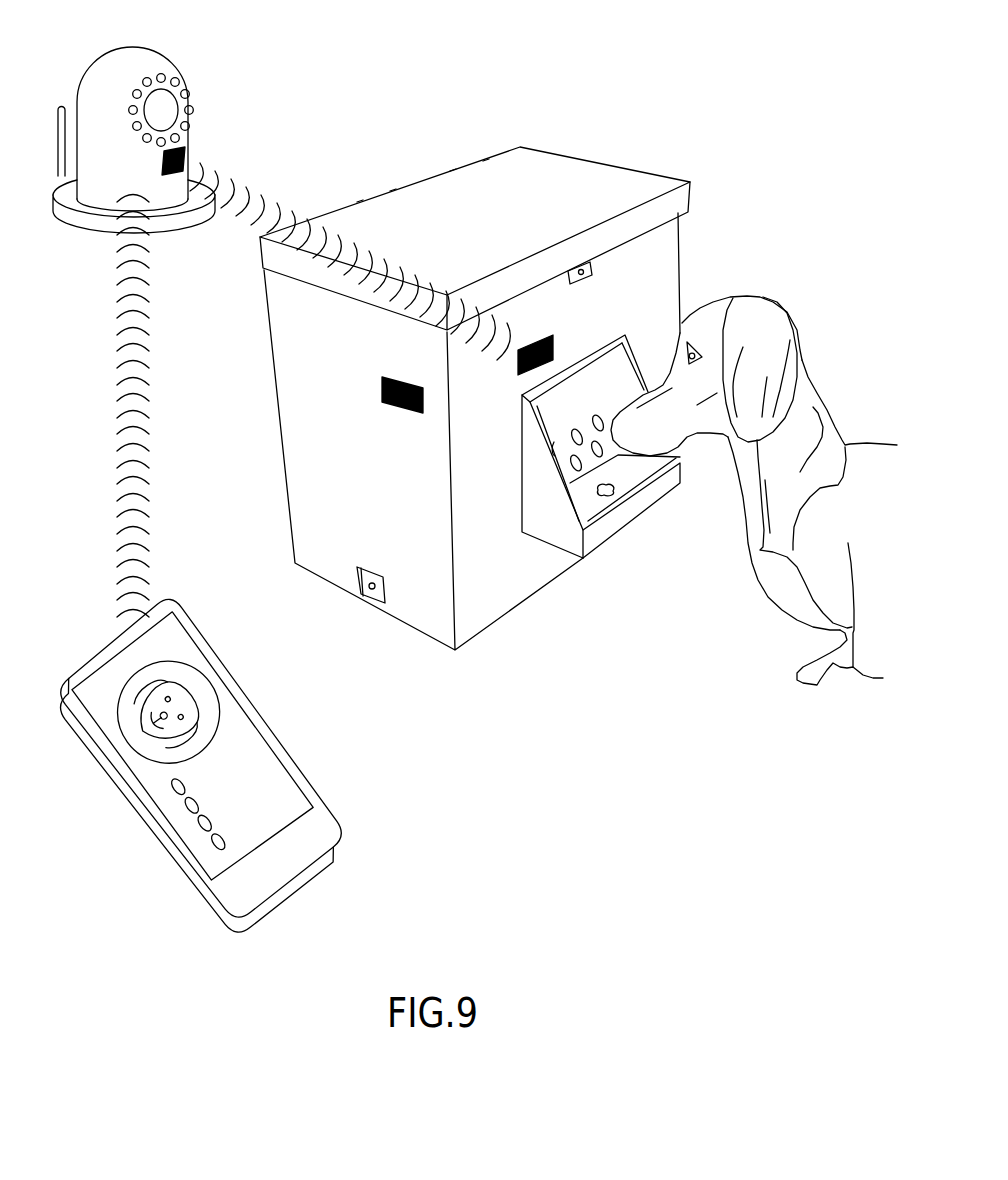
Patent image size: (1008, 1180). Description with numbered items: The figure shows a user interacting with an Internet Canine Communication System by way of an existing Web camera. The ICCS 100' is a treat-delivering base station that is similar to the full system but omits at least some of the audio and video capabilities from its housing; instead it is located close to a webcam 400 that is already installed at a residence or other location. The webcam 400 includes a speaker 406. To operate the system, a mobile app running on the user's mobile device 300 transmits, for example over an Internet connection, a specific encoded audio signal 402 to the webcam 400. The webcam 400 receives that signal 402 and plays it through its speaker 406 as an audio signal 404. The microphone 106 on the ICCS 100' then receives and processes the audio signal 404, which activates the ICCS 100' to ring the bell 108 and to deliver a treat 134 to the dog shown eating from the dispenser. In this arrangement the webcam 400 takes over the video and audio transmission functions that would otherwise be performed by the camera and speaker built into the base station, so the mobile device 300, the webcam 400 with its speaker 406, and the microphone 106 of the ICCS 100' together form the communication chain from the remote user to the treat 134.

The Web camera 400 is at (150, 60).
The speaker 406 is at (185, 160).
The audio signal 404 is at (277, 222).
The encoded audio signal 402 is at (127, 477).
The ICCS 100' is at (479, 362).
The microphone 106 is at (555, 349).
The bell 108 is at (381, 392).
The treat 134 is at (604, 497).
The mobile device 300 is at (300, 757).